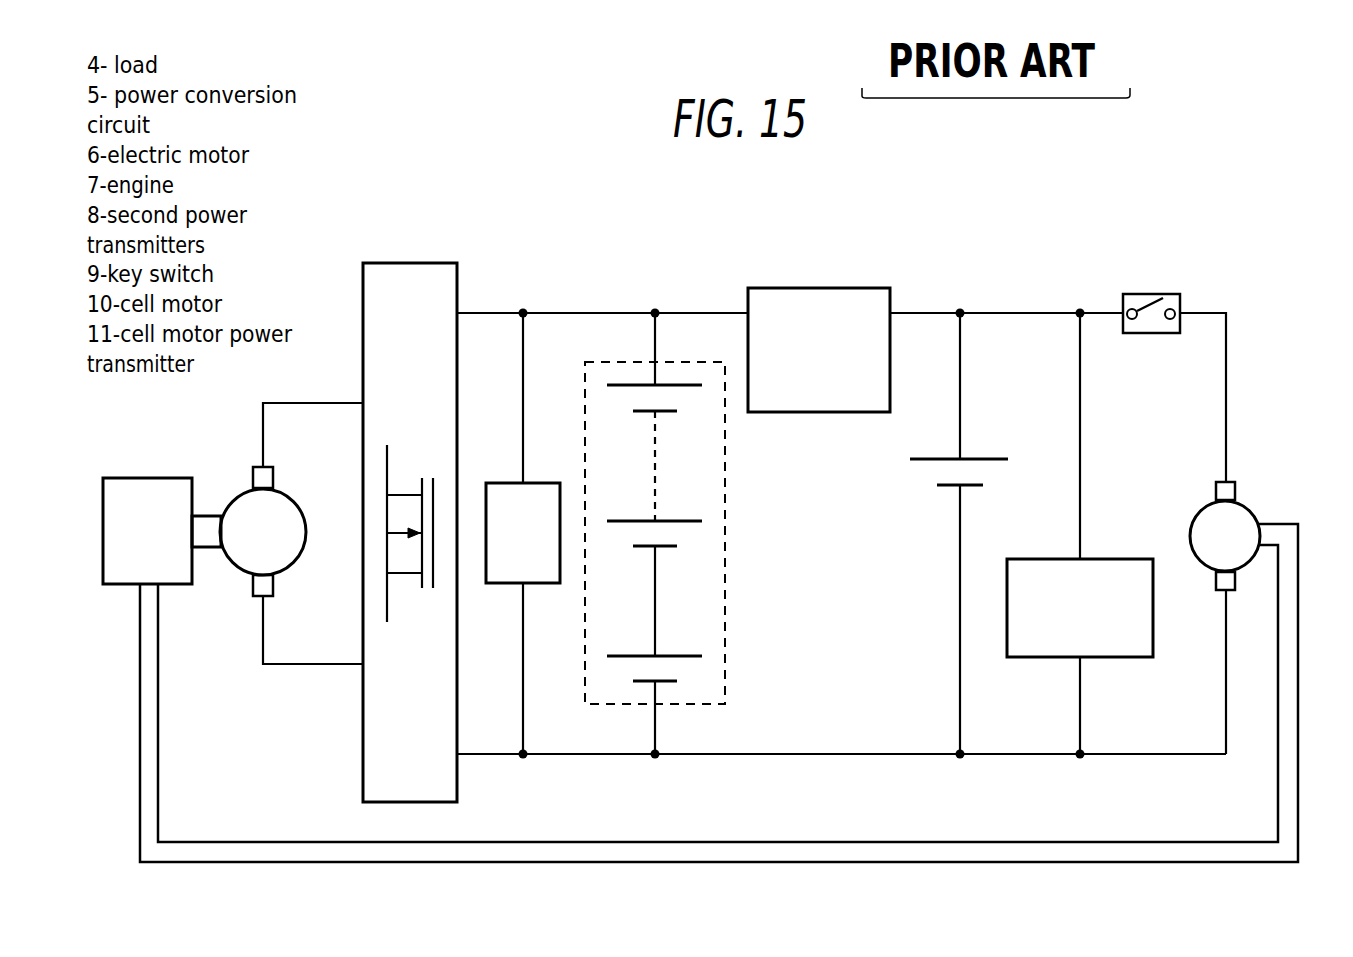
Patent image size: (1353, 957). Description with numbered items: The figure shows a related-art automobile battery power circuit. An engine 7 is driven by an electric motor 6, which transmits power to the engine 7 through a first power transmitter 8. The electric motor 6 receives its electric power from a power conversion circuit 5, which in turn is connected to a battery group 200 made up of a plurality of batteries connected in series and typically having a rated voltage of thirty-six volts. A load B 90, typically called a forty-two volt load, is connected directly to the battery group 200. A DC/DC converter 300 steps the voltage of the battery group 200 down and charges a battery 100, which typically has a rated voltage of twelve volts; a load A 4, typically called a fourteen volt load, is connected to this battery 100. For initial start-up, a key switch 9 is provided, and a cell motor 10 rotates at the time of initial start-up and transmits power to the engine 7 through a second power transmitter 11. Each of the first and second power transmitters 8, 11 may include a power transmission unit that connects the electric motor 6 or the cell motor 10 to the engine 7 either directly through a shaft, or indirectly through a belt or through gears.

The load A 4 is at (1116, 567).
The power conversion circuit 5 is at (411, 272).
The electric motor 6 is at (243, 506).
The engine 7 is at (150, 480).
The first power transmitter 8 is at (208, 537).
The key switch 9 is at (1172, 294).
The cell motor 10 is at (1248, 510).
The second power transmitter 11 is at (773, 850).
The load B 90 is at (503, 490).
The battery 100 is at (990, 457).
The battery group 200 is at (726, 553).
The DC/DC converter 300 is at (818, 297).